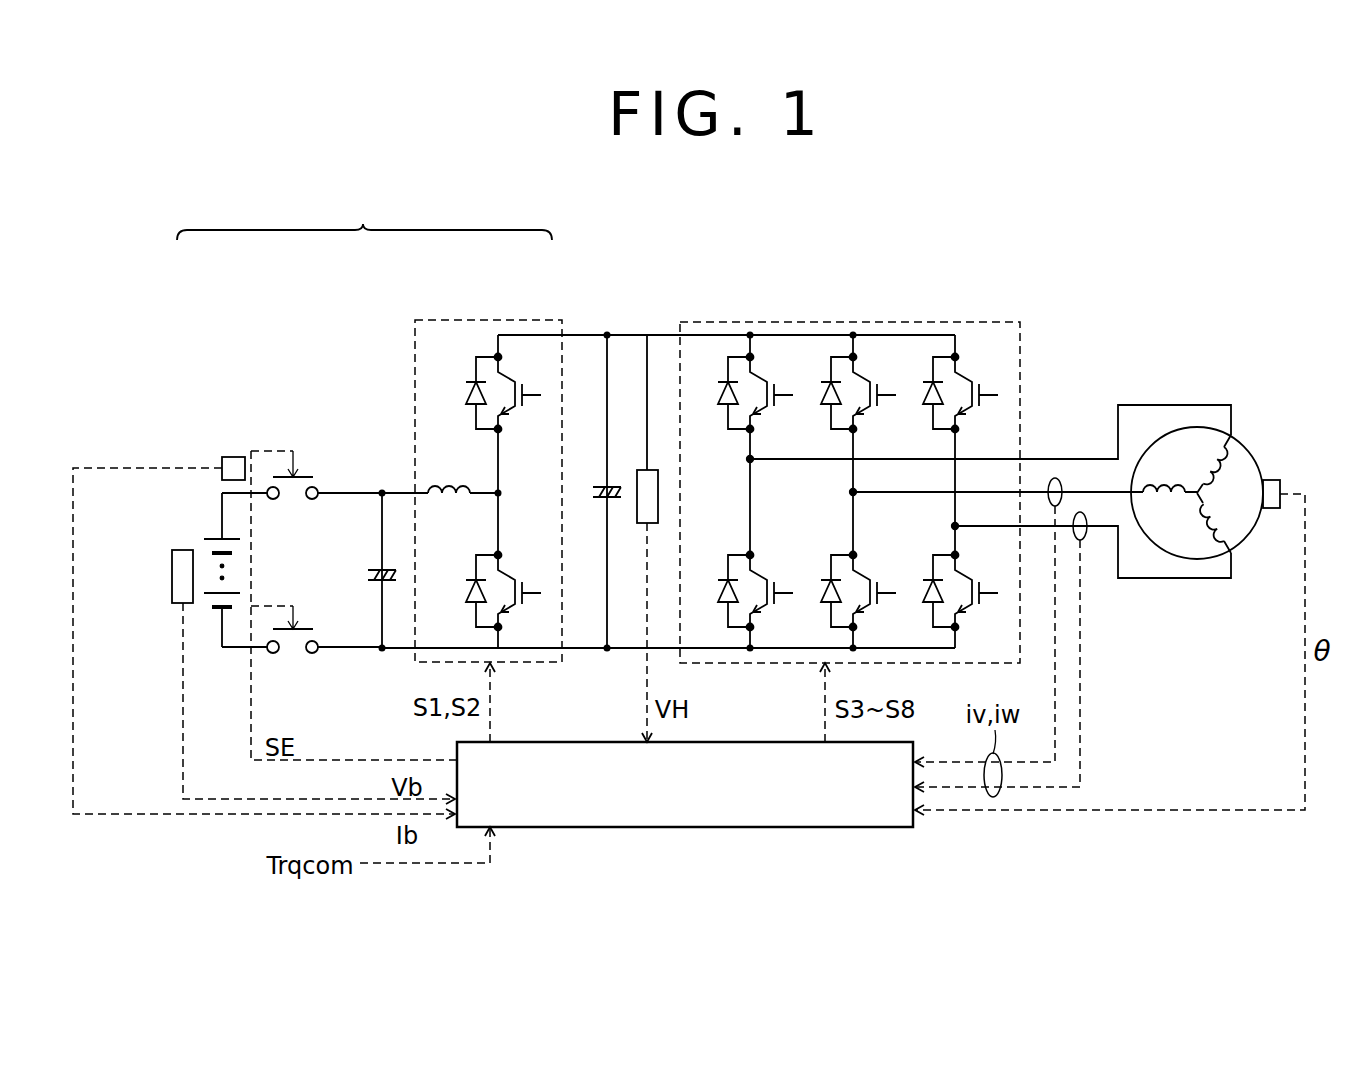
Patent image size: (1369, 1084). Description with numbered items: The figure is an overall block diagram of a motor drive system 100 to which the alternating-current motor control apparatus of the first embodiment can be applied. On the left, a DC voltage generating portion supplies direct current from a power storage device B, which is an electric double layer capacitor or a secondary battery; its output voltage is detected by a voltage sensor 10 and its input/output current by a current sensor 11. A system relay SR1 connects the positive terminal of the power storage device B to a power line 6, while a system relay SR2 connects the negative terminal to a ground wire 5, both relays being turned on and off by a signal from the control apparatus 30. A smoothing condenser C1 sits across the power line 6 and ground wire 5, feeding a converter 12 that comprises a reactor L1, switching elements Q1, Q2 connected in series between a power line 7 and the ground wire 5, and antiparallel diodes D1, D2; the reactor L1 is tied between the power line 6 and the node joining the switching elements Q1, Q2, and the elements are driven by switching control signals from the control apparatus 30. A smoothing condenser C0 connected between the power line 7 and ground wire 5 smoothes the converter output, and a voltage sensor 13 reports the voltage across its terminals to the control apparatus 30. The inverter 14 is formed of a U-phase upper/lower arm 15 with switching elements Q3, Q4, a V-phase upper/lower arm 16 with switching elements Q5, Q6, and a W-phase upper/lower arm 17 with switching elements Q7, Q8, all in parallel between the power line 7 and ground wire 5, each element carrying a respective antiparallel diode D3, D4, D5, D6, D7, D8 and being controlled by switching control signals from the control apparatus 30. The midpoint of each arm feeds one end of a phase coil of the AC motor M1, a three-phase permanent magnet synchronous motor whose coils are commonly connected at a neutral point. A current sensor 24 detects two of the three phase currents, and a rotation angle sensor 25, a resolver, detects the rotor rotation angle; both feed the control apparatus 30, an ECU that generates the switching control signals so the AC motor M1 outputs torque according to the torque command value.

The motor drive system 100 is at (1095, 232).
The power storage device B is at (215, 536).
The voltage sensor 10 is at (172, 578).
The current sensor 11 is at (235, 455).
The system relay SR1 is at (303, 475).
The system relay SR2 is at (303, 627).
The power line 6 is at (357, 491).
The smoothing condenser C1 is at (375, 566).
The converter 12 is at (493, 318).
The reactor L1 is at (445, 482).
The power semiconductor switching element Q1 is at (505, 393).
The power semiconductor switching element Q2 is at (505, 591).
The antiparallel diode D1 is at (452, 393).
The antiparallel diode D2 is at (452, 591).
The power line 7 is at (637, 333).
The ground wire 5 is at (588, 650).
The smoothing condenser C0 is at (598, 484).
The voltage sensor 13 is at (647, 469).
The inverter 14 is at (853, 321).
The U-phase upper/lower arm 15 is at (741, 474).
The V-phase upper/lower arm 16 is at (845, 509).
The W-phase upper/lower arm 17 is at (948, 542).
The switching element Q3 is at (757, 393).
The switching element Q4 is at (757, 591).
The switching element Q5 is at (860, 393).
The switching element Q6 is at (860, 591).
The switching element Q7 is at (962, 393).
The switching element Q8 is at (962, 591).
The antiparallel diode D3 is at (707, 423).
The antiparallel diode D4 is at (707, 621).
The antiparallel diode D5 is at (810, 423).
The antiparallel diode D6 is at (810, 621).
The antiparallel diode D7 is at (912, 423).
The antiparallel diode D8 is at (912, 621).
The current sensor 24 is at (1055, 478).
The AC motor M1 is at (1248, 452).
The rotation angle sensor 25 is at (1283, 481).
The control apparatus 30 is at (755, 741).